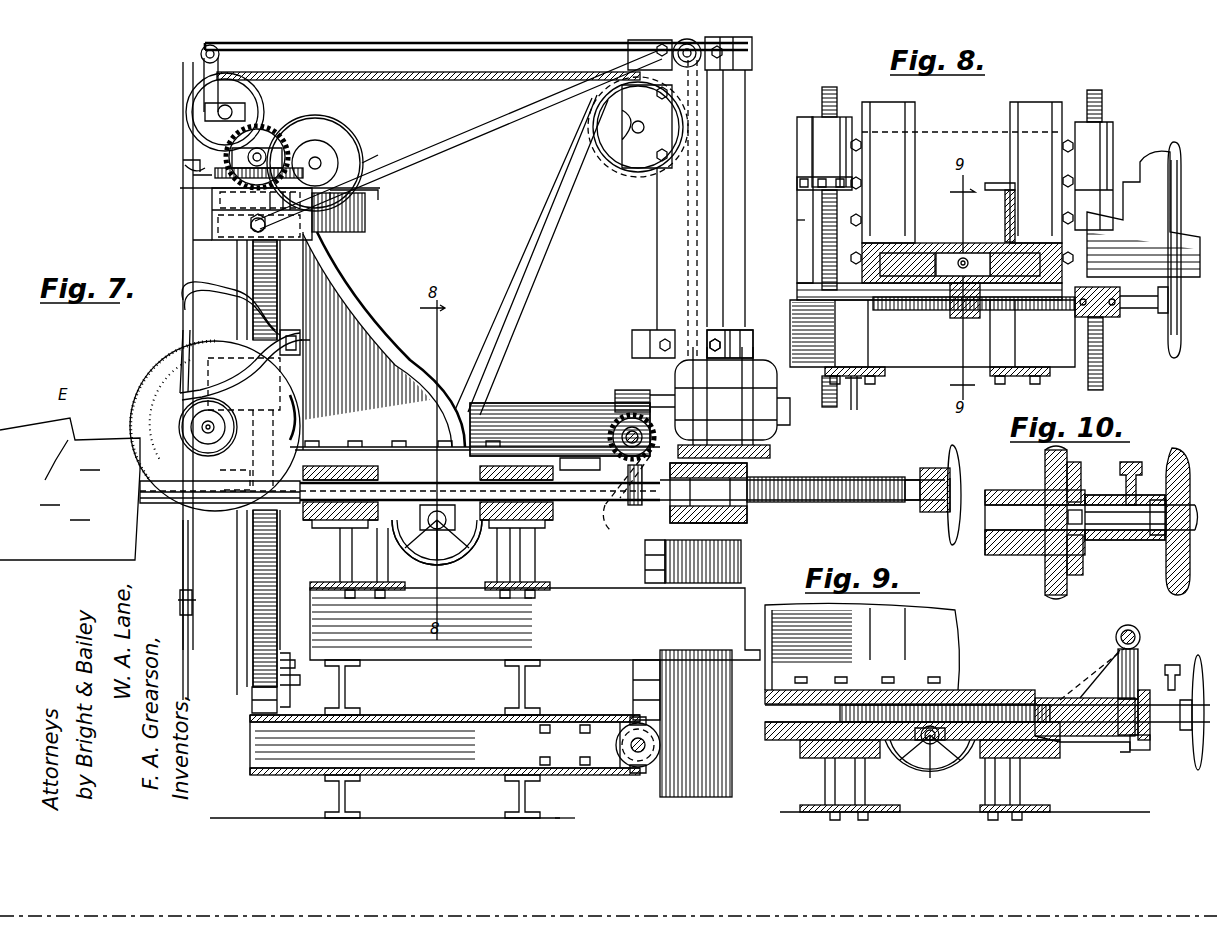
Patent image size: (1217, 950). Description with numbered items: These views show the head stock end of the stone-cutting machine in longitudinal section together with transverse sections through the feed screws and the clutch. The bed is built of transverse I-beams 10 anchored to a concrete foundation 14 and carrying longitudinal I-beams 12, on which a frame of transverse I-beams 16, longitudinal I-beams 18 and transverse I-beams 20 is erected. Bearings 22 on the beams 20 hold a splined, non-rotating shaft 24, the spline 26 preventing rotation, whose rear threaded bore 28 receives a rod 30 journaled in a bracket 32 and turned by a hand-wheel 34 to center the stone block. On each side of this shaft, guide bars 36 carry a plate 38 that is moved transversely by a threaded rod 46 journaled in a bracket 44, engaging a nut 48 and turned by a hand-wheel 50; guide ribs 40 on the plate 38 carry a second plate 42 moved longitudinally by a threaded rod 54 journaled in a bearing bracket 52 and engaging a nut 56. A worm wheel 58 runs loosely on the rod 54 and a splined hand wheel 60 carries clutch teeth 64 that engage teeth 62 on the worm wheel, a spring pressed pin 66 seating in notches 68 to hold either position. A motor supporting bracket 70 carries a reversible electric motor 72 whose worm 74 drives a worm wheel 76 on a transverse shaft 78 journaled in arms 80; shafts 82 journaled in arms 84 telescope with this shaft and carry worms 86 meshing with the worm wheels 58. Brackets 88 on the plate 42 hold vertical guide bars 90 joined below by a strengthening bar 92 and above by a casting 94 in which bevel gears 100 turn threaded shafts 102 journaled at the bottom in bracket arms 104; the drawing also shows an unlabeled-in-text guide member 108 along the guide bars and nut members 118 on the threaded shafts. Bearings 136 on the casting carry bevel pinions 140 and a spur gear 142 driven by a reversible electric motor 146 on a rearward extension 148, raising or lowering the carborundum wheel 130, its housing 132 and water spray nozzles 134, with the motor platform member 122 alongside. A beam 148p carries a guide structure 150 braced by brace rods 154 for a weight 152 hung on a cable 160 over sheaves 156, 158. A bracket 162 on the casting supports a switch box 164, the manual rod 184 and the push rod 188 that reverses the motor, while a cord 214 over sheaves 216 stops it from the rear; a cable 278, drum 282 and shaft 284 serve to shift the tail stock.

In FIG. 7, the I-beams 10 is at (347, 803).
In FIG. 7, the I-beams 12 is at (445, 745).
In FIG. 7, the foundation 14 is at (556, 818).
In FIG. 7, the I-beams 16 is at (347, 690).
In FIG. 7, the I-beams 18 is at (535, 624).
In FIG. 8, the I-beams 18 is at (858, 394).
In FIG. 7, the I-beams 20 is at (340, 556).
In FIG. 8, the I-beams 20 is at (800, 318).
In FIG. 9, the I-beams 20 is at (825, 762).
In FIG. 7, the bearings 22 is at (325, 465).
In FIG. 7, the shaft 24 is at (165, 506).
In FIG. 7, the spline 26 is at (470, 478).
In FIG. 7, the threaded bore 28 is at (690, 524).
In FIG. 7, the rod 30 is at (845, 476).
In FIG. 7, the bracket 32 is at (860, 503).
In FIG. 7, the hand-wheel 34 is at (950, 447).
In FIG. 8, the guide bars 36 is at (855, 296).
In FIG. 9, the guide bars 36 is at (805, 742).
In FIG. 8, the plate 38 is at (912, 300).
In FIG. 9, the plate 38 is at (973, 690).
In FIG. 8, the guide ribs 40 is at (918, 258).
In FIG. 7, the plate 42 is at (400, 468).
In FIG. 8, the plate 42 is at (885, 250).
In FIG. 9, the plate 42 is at (1015, 690).
In FIG. 7, the bracket 44 is at (462, 535).
In FIG. 8, the bracket 44 is at (1110, 314).
In FIG. 7, the threaded rod 46 is at (430, 535).
In FIG. 8, the threaded rod 46 is at (1058, 310).
In FIG. 9, the threaded rod 46 is at (930, 752).
In FIG. 7, the nut 48 is at (400, 488).
In FIG. 8, the nut 48 is at (960, 318).
In FIG. 9, the nut 48 is at (921, 742).
In FIG. 7, the hand-wheel 50 is at (462, 570).
In FIG. 8, the hand-wheel 50 is at (1175, 352).
In FIG. 7, the bearing bracket 52 is at (570, 460).
In FIG. 10, the bearing bracket 52 is at (1005, 556).
In FIG. 9, the bearing bracket 52 is at (1083, 712).
In FIG. 8, the threaded rod 54 is at (966, 256).
In FIG. 10, the threaded rod 54 is at (1000, 503).
In FIG. 9, the threaded rod 54 is at (855, 690).
In FIG. 8, the nut 56 is at (958, 250).
In FIG. 9, the nut 56 is at (905, 690).
In FIG. 7, the worm wheel 58 is at (634, 508).
In FIG. 10, the worm wheel 58 is at (1060, 470).
In FIG. 9, the worm wheel 58 is at (1128, 715).
In FIG. 10, the hand wheel 60 is at (1170, 560).
In FIG. 9, the hand wheel 60 is at (1196, 655).
In FIG. 10, the clutch teeth 62 is at (1076, 570).
In FIG. 9, the clutch teeth 62 is at (1142, 712).
In FIG. 10, the clutch teeth 64 is at (1082, 553).
In FIG. 9, the clutch teeth 64 is at (1146, 690).
In FIG. 10, the spring pressed pin 66 is at (1140, 462).
In FIG. 9, the spring pressed pin 66 is at (1178, 669).
In FIG. 10, the notches 68 is at (1112, 497).
In FIG. 7, the motor supporting bracket 70 is at (772, 452).
In FIG. 7, the reversible electric motor 72 is at (732, 387).
In FIG. 7, the worm 74 is at (632, 388).
In FIG. 7, the worm wheel 76 is at (618, 425).
In FIG. 7, the transverse shaft 78 is at (645, 437).
In FIG. 7, the bearing carrying arms 80 is at (690, 482).
In FIG. 7, the shafts 82 is at (624, 450).
In FIG. 9, the shafts 82 is at (1135, 630).
In FIG. 9, the bearing carrying arms 84 is at (1098, 660).
In FIG. 9, the worms 86 is at (1122, 640).
In FIG. 7, the brackets 88 is at (382, 324).
In FIG. 8, the brackets 88 is at (885, 108).
In FIG. 9, the brackets 88 is at (825, 618).
In FIG. 7, the guide bars 90 is at (236, 571).
In FIG. 7, the strengthening bar 92 is at (281, 675).
In FIG. 7, the casting 94 is at (250, 232).
In FIG. 7, the bevel gear 100 is at (308, 150).
In FIG. 7, the threaded shaft 102 is at (258, 283).
In FIG. 8, the threaded shaft 102 is at (820, 105).
In FIG. 7, the bracket arms 104 is at (250, 703).
In FIG. 7, the guide 108 is at (238, 645).
In FIG. 8, the nuts 118 is at (815, 157).
In FIG. 8, the platform member 122 is at (1143, 214).
In FIG. 7, the carborundum wheel 130 is at (158, 392).
In FIG. 7, the housing 132 is at (300, 397).
In FIG. 8, the housing 132 is at (800, 255).
In FIG. 7, the water spray nozzles 134 is at (186, 372).
In FIG. 7, the bearings 136 is at (298, 128).
In FIG. 7, the bevel pinions 140 is at (253, 147).
In FIG. 7, the spur gear 142 is at (268, 128).
In FIG. 7, the reversible electric motor 146 is at (381, 151).
In FIG. 7, the rearward extension 148 is at (513, 406).
In FIG. 7, the beam 148p is at (365, 222).
In FIG. 8, the beam 148p is at (1015, 186).
In FIG. 7, the guide structure 150 is at (657, 290).
In FIG. 7, the weight 152 is at (741, 558).
In FIG. 7, the brace rods 154 is at (490, 125).
In FIG. 7, the sheave 156 is at (632, 172).
In FIG. 7, the sheave 158 is at (245, 88).
In FIG. 7, the cable 160 is at (482, 72).
In FIG. 7, the bracket 162 is at (212, 185).
In FIG. 7, the switch box 164 is at (200, 205).
In FIG. 7, the rod 184 is at (380, 190).
In FIG. 7, the push rod 188 is at (185, 568).
In FIG. 7, the cord 214 is at (360, 46).
In FIG. 7, the sheaves 216 is at (200, 55).
In FIG. 7, the cable 278 is at (445, 707).
In FIG. 7, the drum 282 is at (648, 735).
In FIG. 7, the shaft 284 is at (642, 752).